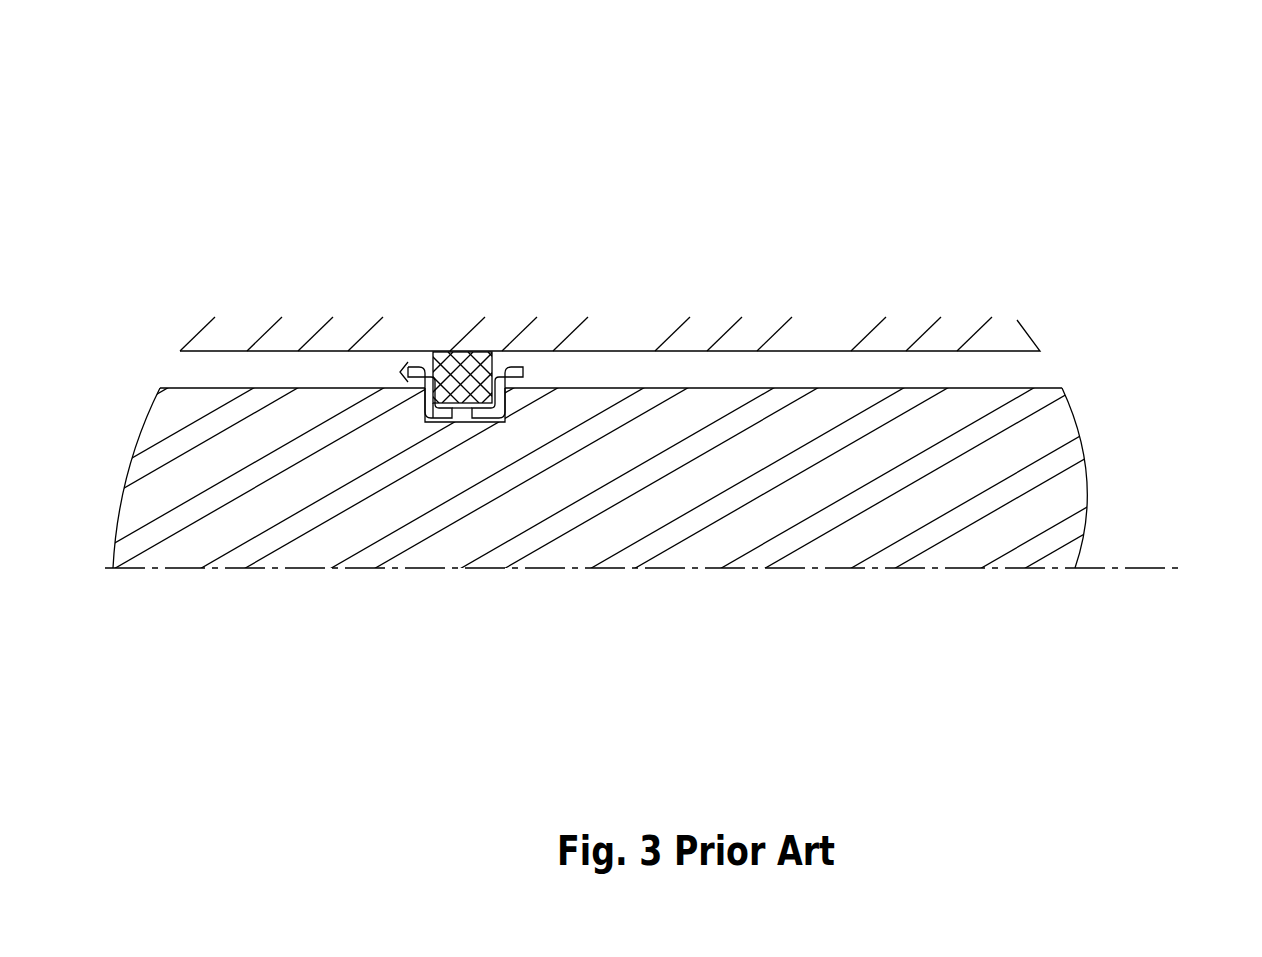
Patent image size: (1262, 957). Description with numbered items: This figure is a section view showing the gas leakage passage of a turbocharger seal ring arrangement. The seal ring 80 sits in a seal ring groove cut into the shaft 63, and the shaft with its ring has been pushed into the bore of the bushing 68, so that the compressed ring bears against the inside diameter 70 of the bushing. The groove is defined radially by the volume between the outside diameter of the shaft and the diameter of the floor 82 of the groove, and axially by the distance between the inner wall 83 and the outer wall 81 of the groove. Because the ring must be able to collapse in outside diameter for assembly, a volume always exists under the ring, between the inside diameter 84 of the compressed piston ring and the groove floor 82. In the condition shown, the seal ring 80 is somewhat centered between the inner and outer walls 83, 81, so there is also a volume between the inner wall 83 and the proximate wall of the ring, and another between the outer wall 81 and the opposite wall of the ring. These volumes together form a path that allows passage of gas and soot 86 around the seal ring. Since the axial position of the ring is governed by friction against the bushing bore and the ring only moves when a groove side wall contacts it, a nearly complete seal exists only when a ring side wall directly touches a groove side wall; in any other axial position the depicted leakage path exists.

The shaft 63 is at (977, 482).
The bushing 68 is at (347, 341).
The inside diameter of the bushing 70 is at (851, 351).
The seal ring 80 is at (468, 378).
The outer wall of the seal ring groove 81 is at (417, 413).
The floor of the seal ring groove 82 is at (440, 414).
The inner wall of the seal ring groove 83 is at (513, 413).
The inside diameter of the compressed piston ring 84 is at (462, 408).
The gas and soot 86 is at (622, 369).